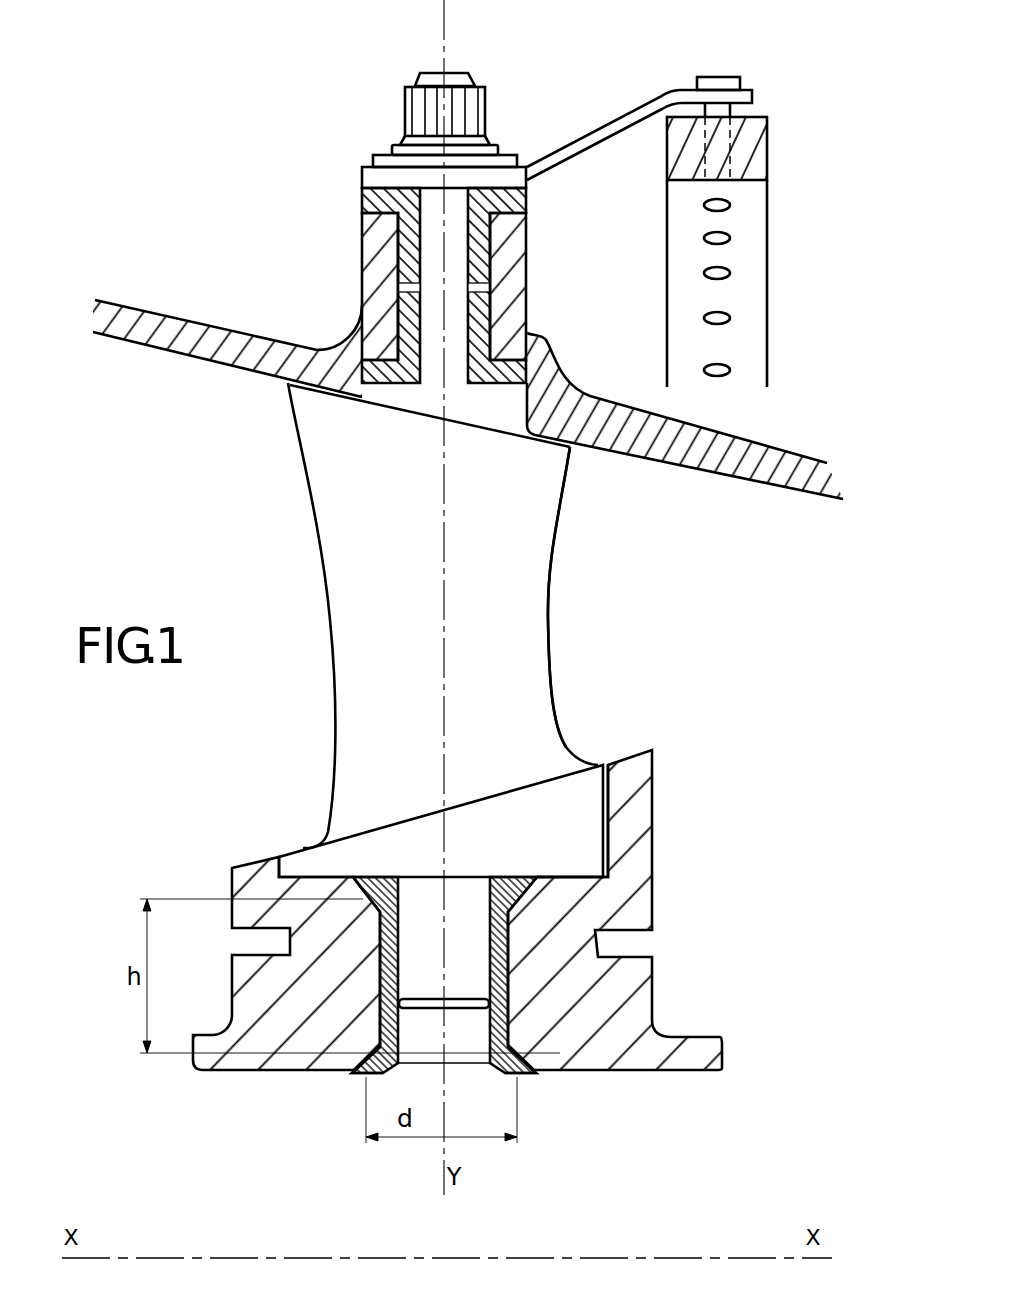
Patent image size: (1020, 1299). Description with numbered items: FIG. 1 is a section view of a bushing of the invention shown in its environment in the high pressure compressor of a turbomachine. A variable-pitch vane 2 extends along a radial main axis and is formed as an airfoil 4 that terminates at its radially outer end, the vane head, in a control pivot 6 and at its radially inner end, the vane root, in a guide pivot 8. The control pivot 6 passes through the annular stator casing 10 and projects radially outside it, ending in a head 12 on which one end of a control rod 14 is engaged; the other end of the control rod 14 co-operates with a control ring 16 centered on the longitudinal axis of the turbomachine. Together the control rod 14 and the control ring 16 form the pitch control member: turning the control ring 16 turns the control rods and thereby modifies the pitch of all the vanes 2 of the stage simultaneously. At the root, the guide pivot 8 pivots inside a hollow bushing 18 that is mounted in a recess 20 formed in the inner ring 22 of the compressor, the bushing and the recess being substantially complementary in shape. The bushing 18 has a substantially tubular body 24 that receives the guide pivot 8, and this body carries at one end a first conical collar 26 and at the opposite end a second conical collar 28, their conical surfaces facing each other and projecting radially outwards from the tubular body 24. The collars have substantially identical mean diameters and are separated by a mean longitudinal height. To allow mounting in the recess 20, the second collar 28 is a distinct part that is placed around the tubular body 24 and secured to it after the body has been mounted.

The variable-pitch vane 2 is at (565, 571).
The airfoil 4 is at (527, 660).
The control pivot 6 is at (457, 312).
The guide pivot 8 is at (466, 900).
The stator casing 10 is at (185, 328).
The head 12 is at (423, 112).
The control rod 14 is at (575, 150).
The control ring 16 is at (768, 134).
The bushing 18 is at (405, 1033).
The recess 20 is at (373, 980).
The inner ring 22 is at (655, 982).
The tubular body 24 is at (390, 930).
The first conical collar 26 is at (383, 860).
The second conical collar 28 is at (523, 1073).